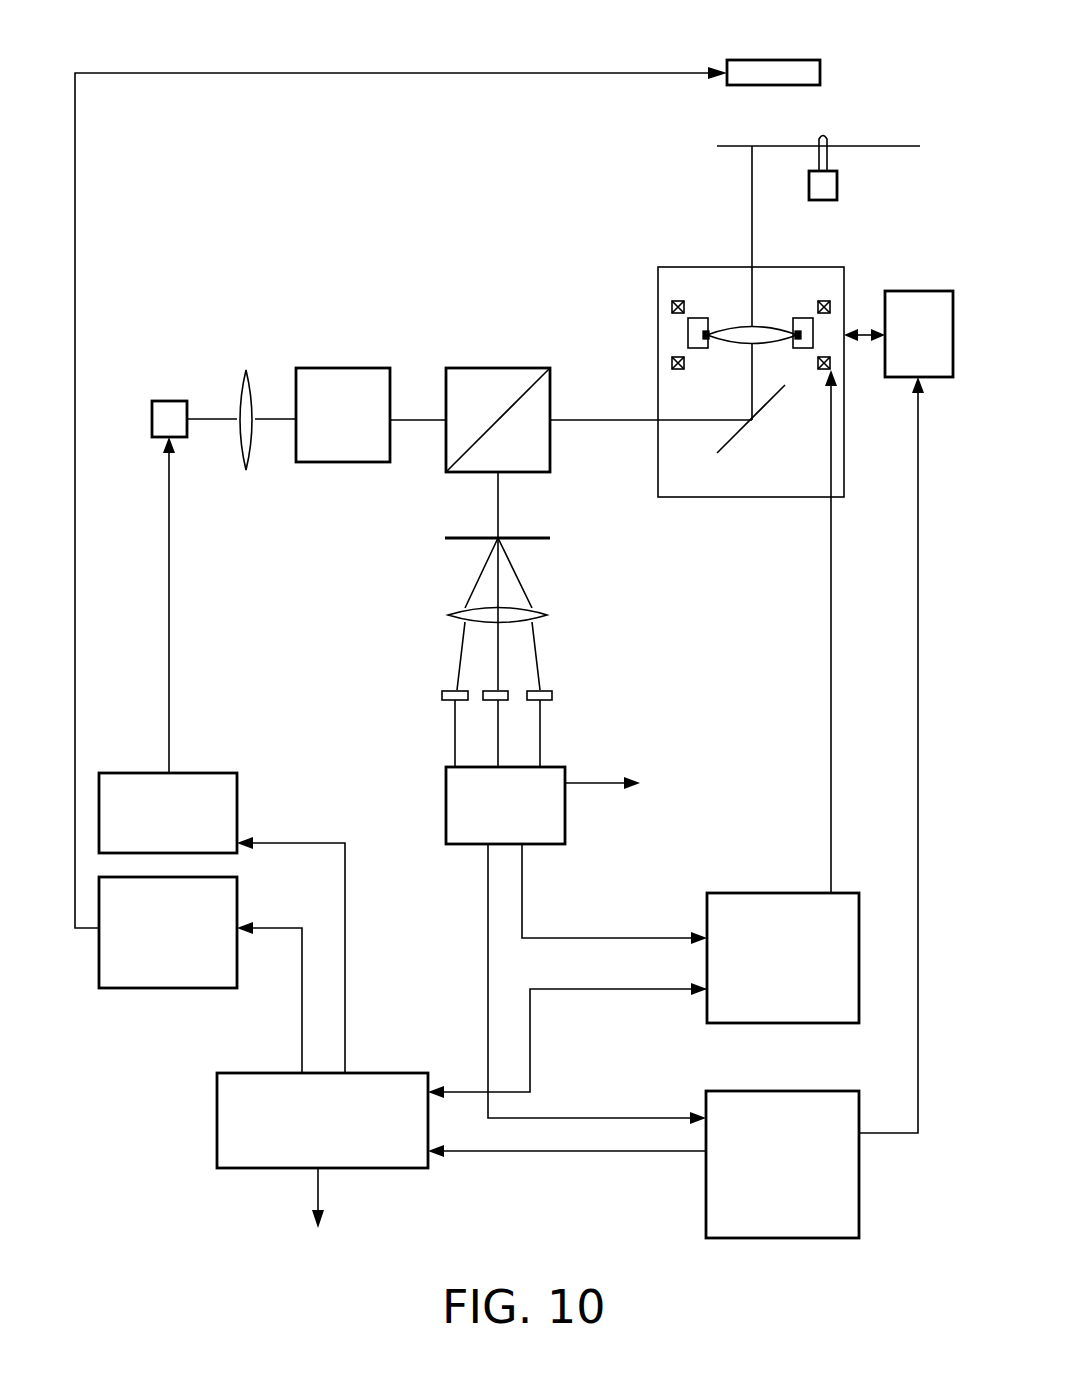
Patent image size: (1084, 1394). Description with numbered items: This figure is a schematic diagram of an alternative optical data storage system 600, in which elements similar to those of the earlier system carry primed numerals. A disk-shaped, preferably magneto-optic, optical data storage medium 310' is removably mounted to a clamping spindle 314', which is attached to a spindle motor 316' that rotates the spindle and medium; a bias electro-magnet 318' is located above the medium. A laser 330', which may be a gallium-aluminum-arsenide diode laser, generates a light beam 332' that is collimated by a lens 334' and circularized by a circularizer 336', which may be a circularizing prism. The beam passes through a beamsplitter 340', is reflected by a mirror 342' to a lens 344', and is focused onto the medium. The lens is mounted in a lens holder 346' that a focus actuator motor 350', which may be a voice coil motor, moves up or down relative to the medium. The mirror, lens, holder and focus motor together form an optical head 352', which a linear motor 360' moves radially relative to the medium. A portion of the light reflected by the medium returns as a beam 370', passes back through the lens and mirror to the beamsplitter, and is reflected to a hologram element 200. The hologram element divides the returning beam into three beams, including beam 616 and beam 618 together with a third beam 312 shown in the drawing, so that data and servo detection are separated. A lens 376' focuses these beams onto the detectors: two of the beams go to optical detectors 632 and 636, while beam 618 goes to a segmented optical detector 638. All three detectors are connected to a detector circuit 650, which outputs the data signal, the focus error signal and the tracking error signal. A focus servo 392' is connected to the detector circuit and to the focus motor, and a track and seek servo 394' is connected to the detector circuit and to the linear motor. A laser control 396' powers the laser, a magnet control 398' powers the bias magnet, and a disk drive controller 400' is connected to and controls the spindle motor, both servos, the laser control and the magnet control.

The optical data storage system 600 is at (617, 1240).
The bias electro-magnet 318' is at (789, 52).
The optical data storage medium 310' is at (837, 127).
The clamping spindle 314' is at (858, 139).
The spindle motor 316' is at (858, 179).
The reflected beam 370' is at (716, 283).
The optical head 352' is at (712, 382).
The lens 344' is at (779, 286).
The lens holder 346' is at (715, 288).
The focus actuator motor 350' is at (792, 299).
The mirror 342' is at (772, 433).
The linear motor 360' is at (899, 316).
The laser 330' is at (137, 400).
The light beam 332' is at (469, 465).
The lens 334' is at (213, 403).
The circularizer 336' is at (328, 399).
The beamsplitter 340' is at (486, 404).
The hologram element 200 is at (460, 538).
The lens 376' is at (456, 602).
The light beam 312 is at (457, 675).
The beam 616 is at (535, 652).
The beam 618 is at (496, 660).
The optical detector 632 is at (447, 698).
The optical detector 636 is at (547, 690).
The segmented optical detector 638 is at (510, 700).
The detector circuit 650 is at (446, 800).
The focus servo 392' is at (643, 734).
The track and seek servo 394' is at (676, 807).
The laser control 396' is at (222, 755).
The magnet control 398' is at (200, 975).
The disk drive controller 400' is at (336, 1139).